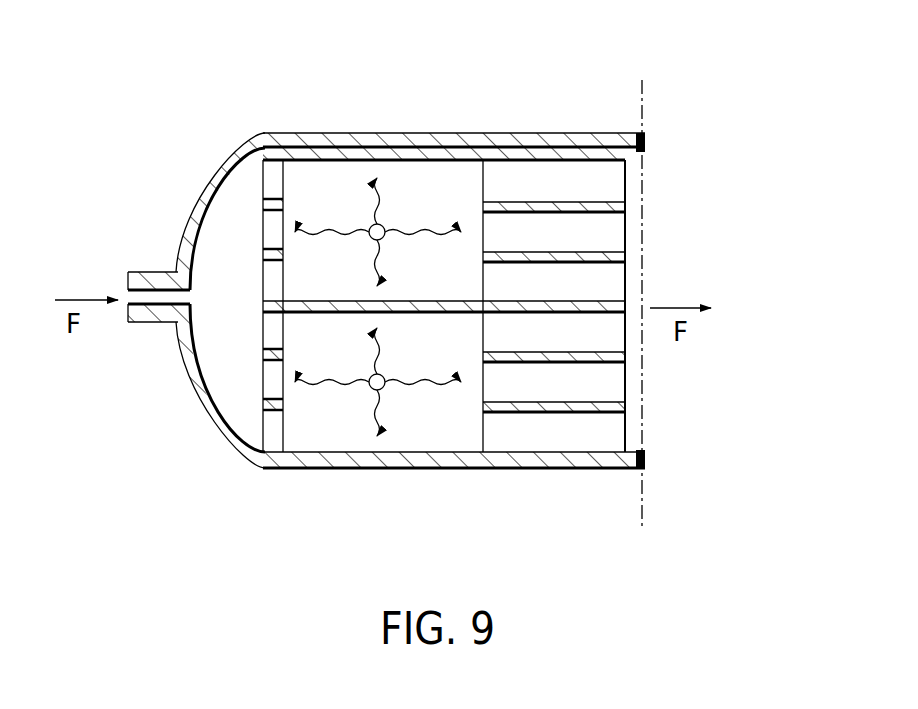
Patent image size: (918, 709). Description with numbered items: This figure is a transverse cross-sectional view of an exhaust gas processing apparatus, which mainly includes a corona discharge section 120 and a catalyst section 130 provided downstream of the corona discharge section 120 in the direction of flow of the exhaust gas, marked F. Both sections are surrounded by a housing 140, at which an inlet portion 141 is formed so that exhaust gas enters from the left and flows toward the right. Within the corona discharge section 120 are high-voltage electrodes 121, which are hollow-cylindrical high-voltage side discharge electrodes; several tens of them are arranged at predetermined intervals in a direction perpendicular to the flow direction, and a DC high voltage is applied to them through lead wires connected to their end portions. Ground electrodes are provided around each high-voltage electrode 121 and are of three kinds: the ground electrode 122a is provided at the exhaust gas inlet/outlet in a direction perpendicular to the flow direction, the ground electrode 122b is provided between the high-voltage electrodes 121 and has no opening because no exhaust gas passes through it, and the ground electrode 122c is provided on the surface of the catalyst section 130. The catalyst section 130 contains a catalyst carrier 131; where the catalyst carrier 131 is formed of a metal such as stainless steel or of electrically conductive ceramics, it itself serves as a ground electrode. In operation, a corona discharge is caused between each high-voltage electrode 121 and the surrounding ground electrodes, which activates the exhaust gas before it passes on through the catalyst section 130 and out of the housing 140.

The corona discharge section 120 is at (414, 180).
The high-voltage electrode 121 is at (384, 389).
The ground electrode 122a is at (261, 200).
The ground electrode 122b is at (318, 297).
The ground electrode 122c is at (457, 150).
The catalyst section 130 is at (568, 176).
The catalyst carrier 131 is at (591, 201).
The housing 140 is at (522, 462).
The inlet portion 141 is at (135, 323).